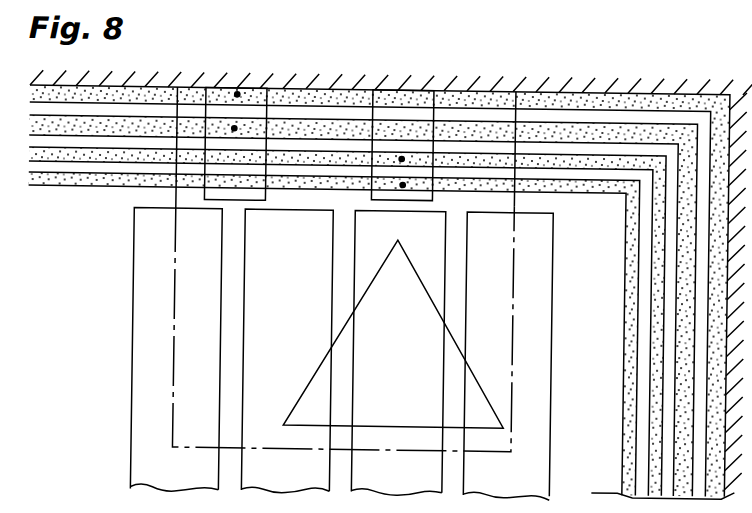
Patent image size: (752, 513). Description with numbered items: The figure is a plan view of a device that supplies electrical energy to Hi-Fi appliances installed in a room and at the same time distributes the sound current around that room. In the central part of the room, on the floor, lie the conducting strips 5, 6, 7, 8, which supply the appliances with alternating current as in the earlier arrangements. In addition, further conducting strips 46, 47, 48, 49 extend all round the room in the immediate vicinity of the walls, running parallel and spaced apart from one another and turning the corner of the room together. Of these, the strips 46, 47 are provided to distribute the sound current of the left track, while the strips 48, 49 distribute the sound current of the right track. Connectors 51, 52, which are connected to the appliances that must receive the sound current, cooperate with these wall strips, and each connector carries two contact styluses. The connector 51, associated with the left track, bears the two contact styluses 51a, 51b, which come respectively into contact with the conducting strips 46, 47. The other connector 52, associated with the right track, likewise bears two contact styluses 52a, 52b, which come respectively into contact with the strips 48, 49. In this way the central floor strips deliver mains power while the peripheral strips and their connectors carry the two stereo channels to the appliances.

The conducting strip 5 is at (176, 349).
The conducting strip 6 is at (287, 351).
The conducting strip 7 is at (398, 353).
The conducting strip 8 is at (508, 356).
The conducting strip 46 is at (322, 91).
The conducting strip 47 is at (343, 128).
The conducting strip 48 is at (381, 153).
The conducting strip 49 is at (490, 178).
The connector 51 is at (206, 106).
The contact stylus 51a is at (237, 91).
The contact stylus 51b is at (235, 125).
The connector 52 is at (434, 109).
The contact stylus 52a is at (403, 154).
The contact stylus 52b is at (404, 180).